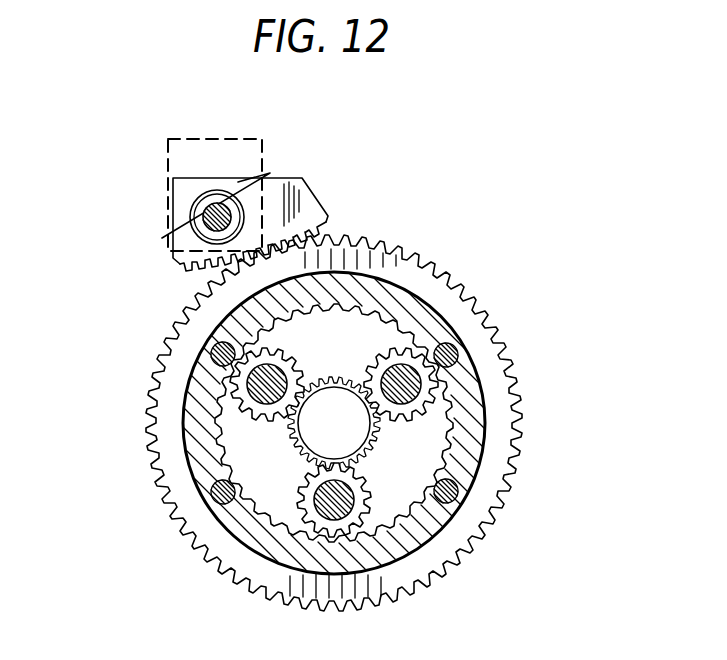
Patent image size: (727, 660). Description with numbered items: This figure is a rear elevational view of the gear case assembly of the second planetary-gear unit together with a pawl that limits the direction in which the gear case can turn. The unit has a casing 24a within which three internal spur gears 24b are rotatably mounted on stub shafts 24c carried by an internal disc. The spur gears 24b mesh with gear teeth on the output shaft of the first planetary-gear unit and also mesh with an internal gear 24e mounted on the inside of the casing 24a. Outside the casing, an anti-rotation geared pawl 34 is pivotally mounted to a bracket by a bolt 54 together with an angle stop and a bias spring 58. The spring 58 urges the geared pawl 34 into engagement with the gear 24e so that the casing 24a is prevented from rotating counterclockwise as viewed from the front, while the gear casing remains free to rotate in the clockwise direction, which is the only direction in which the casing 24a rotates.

The casing 24a is at (367, 370).
The internal spur gears 24b is at (262, 390).
The stub shafts 24c is at (450, 322).
The internal gear 24e is at (508, 434).
The geared pawl 34 is at (287, 190).
The bolt 54 is at (203, 208).
The bias spring 58 is at (203, 187).